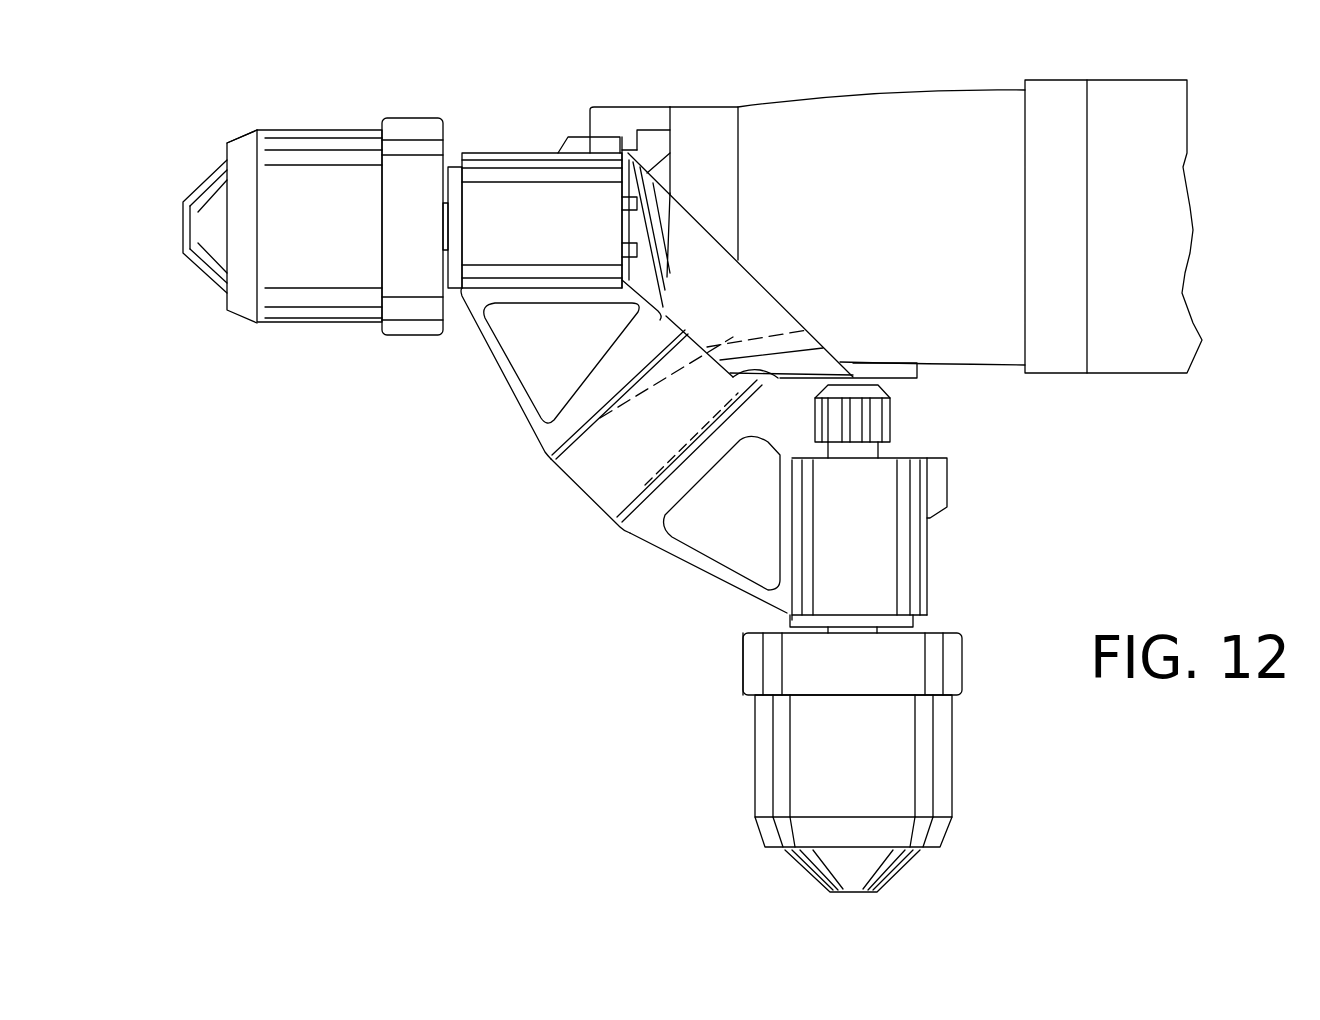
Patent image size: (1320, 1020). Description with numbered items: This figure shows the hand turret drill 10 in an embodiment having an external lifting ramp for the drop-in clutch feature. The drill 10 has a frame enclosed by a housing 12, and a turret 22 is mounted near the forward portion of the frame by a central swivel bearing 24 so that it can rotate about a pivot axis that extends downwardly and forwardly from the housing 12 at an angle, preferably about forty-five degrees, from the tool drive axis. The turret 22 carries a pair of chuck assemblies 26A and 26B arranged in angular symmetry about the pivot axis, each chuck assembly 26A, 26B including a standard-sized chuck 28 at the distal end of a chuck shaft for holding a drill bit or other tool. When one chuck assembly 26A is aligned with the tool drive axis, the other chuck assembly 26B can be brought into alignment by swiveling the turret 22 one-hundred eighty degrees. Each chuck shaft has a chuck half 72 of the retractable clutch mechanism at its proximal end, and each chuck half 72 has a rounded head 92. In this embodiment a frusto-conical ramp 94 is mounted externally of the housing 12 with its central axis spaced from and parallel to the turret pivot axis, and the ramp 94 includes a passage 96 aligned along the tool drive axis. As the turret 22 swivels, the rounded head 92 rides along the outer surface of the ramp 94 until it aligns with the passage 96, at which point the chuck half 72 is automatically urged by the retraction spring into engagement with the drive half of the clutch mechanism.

The hand turret drill 10 is at (477, 620).
The housing 12 is at (947, 85).
The turret 22 is at (518, 405).
The central swivel bearing 24 is at (600, 468).
The chuck assembly 26A is at (480, 113).
The chuck assembly 26B is at (978, 573).
The chuck 28 is at (337, 238).
The chuck half 72 is at (893, 422).
The rounded head 92 is at (843, 377).
The frusto-conical ramp 94 is at (808, 382).
The passage 96 is at (625, 197).